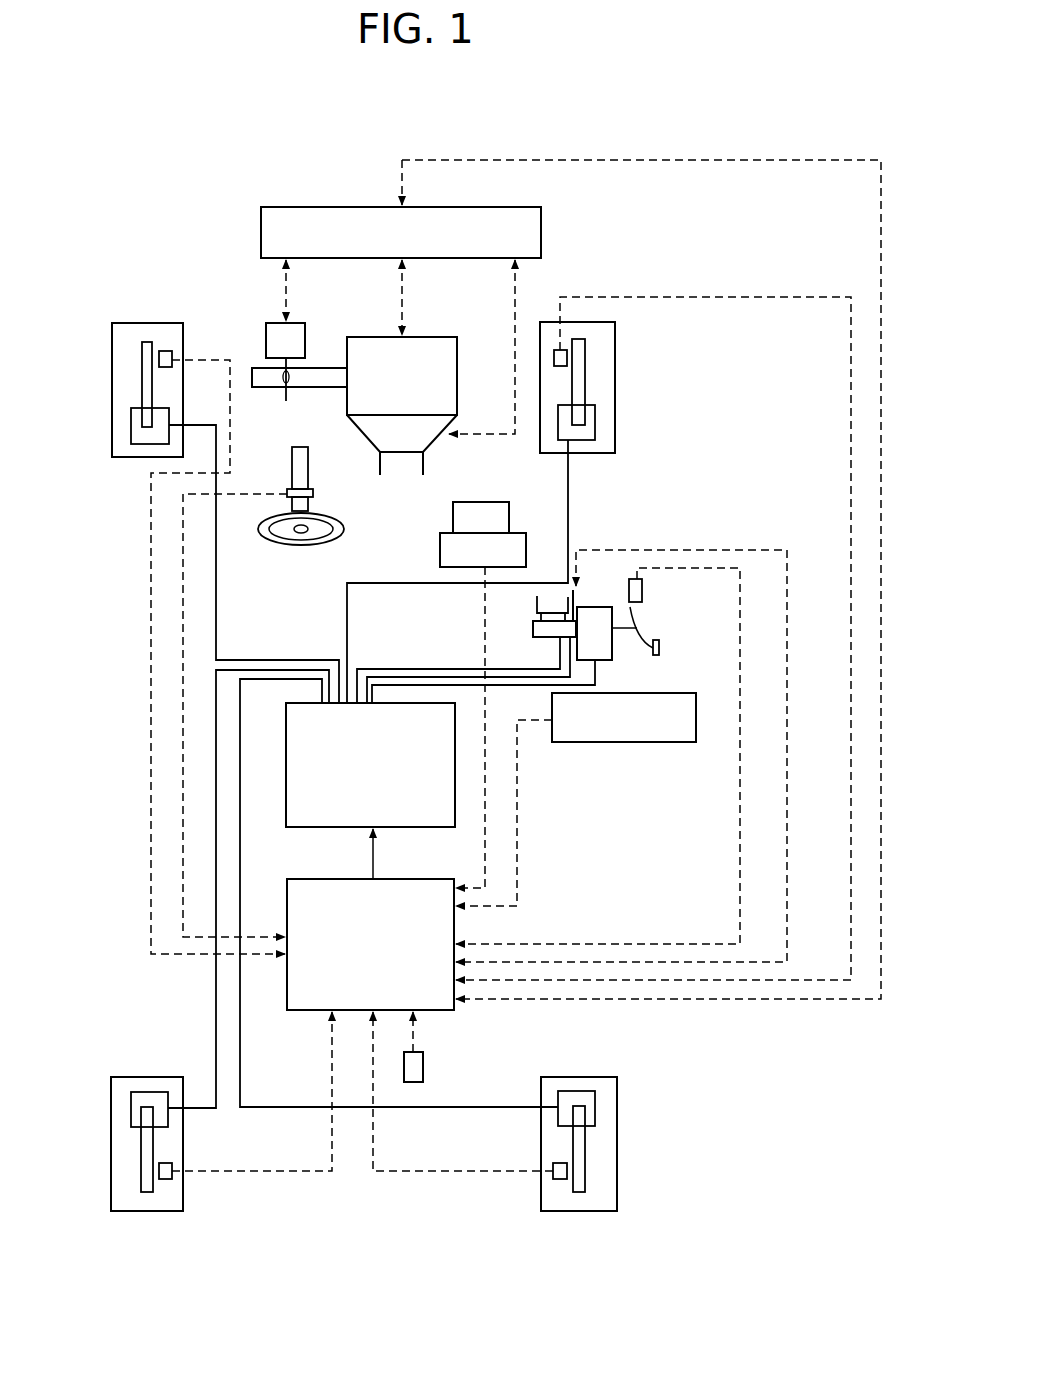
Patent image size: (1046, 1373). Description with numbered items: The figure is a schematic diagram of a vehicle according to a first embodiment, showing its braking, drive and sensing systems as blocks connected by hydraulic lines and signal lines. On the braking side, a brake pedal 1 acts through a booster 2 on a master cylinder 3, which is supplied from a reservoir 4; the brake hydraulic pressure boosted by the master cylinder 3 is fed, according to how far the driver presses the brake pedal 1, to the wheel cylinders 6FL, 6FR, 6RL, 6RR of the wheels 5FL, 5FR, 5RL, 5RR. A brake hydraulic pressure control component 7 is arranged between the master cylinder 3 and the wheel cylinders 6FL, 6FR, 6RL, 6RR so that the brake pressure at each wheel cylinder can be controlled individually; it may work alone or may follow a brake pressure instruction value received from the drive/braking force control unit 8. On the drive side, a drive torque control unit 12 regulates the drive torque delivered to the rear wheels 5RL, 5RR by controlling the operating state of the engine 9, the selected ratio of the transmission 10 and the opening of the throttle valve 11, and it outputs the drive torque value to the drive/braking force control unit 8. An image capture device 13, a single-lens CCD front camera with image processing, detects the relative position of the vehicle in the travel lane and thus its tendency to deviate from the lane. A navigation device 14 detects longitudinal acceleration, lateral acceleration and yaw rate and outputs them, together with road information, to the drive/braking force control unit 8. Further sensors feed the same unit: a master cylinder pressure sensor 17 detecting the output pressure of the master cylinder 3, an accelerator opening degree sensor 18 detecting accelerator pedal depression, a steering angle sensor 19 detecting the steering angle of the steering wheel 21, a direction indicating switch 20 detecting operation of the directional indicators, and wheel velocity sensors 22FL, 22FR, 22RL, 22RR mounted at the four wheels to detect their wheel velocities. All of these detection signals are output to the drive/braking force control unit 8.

The brake pedal 1 is at (661, 648).
The booster 2 is at (612, 650).
The master cylinder 3 is at (532, 628).
The reservoir 4 is at (536, 602).
The front left wheel 5FL is at (118, 322).
The front right wheel 5FR is at (616, 350).
The rear left wheel 5RL is at (148, 1076).
The rear right wheel 5RR is at (582, 1076).
The front left wheel cylinder 6FL is at (130, 425).
The front right wheel cylinder 6FR is at (596, 418).
The rear left wheel cylinder 6RL is at (130, 1109).
The rear right wheel cylinder 6RR is at (596, 1108).
The brake hydraulic pressure control component 7 is at (285, 752).
The drive/braking force control unit 8 is at (302, 878).
The engine 9 is at (437, 336).
The transmission 10 is at (354, 427).
The throttle valve 11 is at (277, 395).
The drive torque control unit 12 is at (542, 229).
The image capture device 13 is at (439, 554).
The navigation device 14 is at (563, 744).
The master cylinder pressure sensor 17 is at (588, 600).
The accelerator opening degree sensor 18 is at (650, 591).
The steering angle sensor 19 is at (314, 493).
The direction indicating switch 20 is at (424, 1062).
The steering wheel 21 is at (345, 529).
The front left wheel velocity sensor 22FL is at (165, 350).
The front right wheel velocity sensor 22FR is at (557, 349).
The rear left wheel velocity sensor 22RL is at (174, 1175).
The rear right wheel velocity sensor 22RR is at (540, 1175).